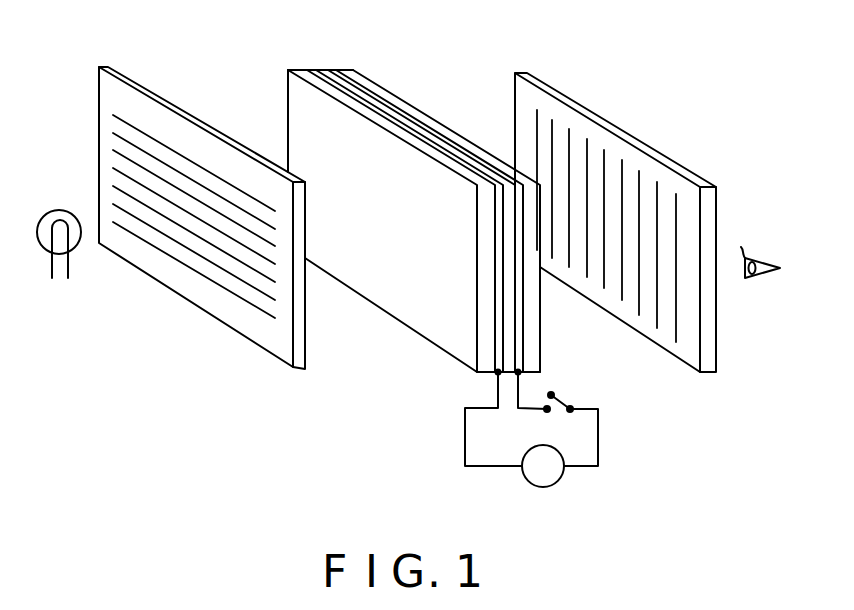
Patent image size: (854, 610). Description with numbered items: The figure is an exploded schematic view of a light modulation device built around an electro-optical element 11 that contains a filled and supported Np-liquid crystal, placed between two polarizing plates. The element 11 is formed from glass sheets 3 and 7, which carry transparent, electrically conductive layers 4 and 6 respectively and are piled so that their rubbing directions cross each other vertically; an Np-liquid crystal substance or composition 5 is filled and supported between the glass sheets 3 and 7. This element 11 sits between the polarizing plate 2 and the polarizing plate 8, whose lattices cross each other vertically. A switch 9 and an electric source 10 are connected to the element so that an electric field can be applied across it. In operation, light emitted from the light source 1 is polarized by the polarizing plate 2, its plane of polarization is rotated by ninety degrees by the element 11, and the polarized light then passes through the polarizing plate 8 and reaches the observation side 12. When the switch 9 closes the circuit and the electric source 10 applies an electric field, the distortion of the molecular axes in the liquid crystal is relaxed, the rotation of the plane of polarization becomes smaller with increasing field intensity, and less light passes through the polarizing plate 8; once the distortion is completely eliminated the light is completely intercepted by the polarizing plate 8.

The light source 1 is at (54, 210).
The polarizing plate 2 is at (122, 76).
The glass sheet 3 is at (300, 73).
The transparent, electrically conductive layer 4 is at (313, 70).
The Np-liquid crystal substance or composition 5 is at (323, 70).
The transparent, electrically conductive layer 6 is at (336, 70).
The glass sheet 7 is at (350, 72).
The polarizing plate 8 is at (540, 80).
The switch 9 is at (562, 396).
The electric source 10 is at (561, 478).
The element 11 is at (377, 268).
The observation side 12 is at (757, 280).